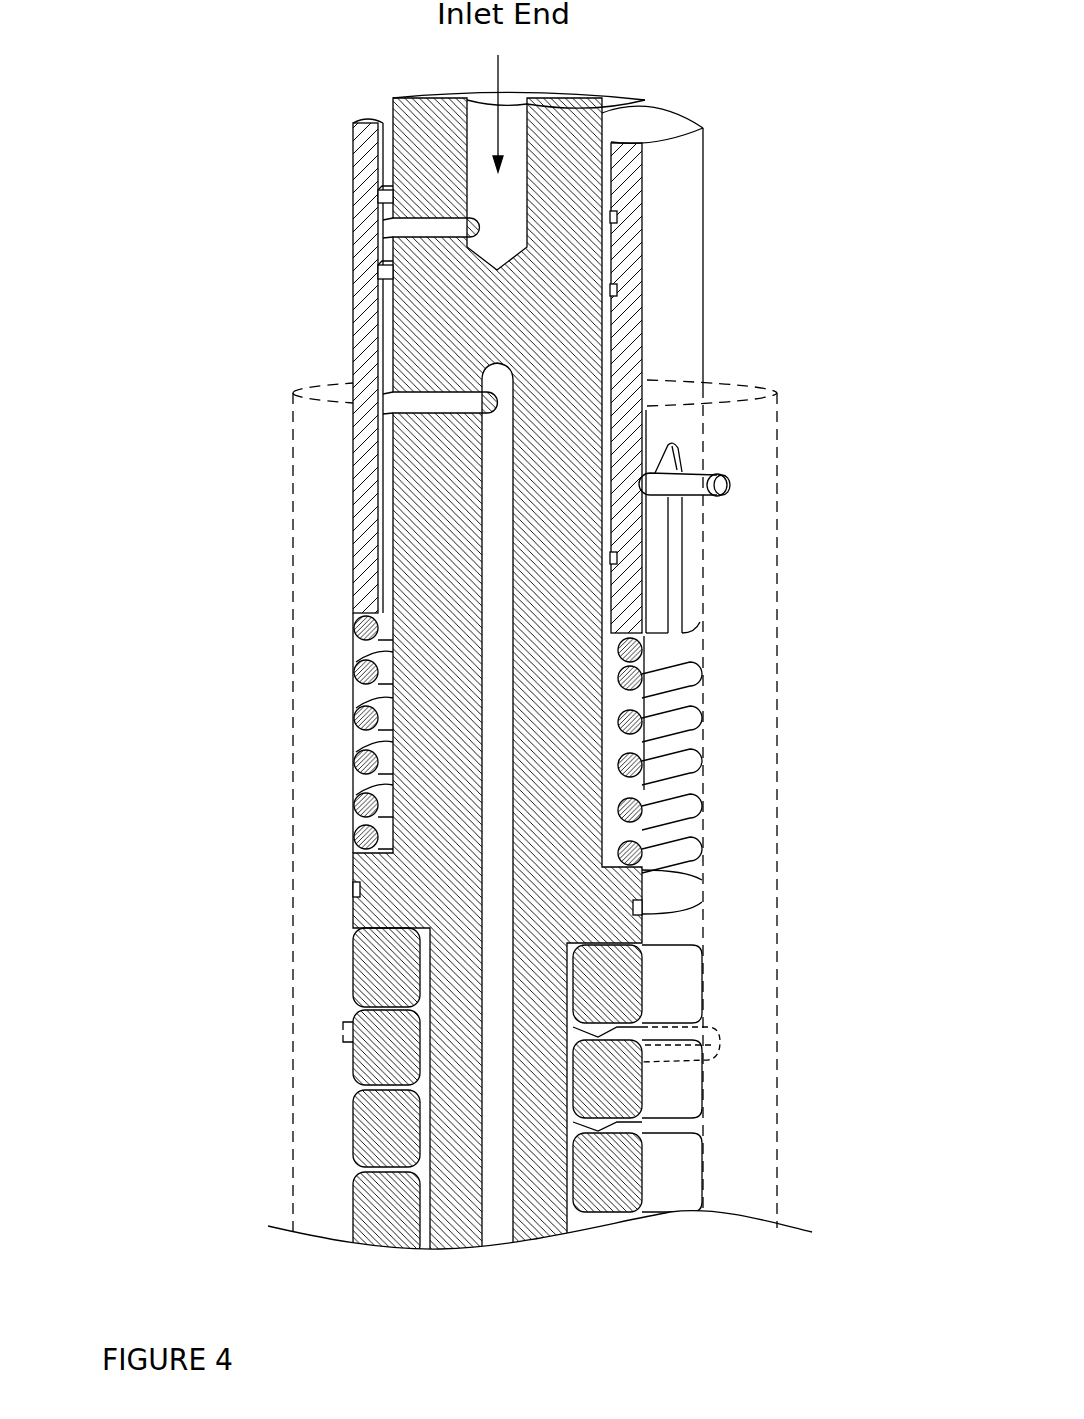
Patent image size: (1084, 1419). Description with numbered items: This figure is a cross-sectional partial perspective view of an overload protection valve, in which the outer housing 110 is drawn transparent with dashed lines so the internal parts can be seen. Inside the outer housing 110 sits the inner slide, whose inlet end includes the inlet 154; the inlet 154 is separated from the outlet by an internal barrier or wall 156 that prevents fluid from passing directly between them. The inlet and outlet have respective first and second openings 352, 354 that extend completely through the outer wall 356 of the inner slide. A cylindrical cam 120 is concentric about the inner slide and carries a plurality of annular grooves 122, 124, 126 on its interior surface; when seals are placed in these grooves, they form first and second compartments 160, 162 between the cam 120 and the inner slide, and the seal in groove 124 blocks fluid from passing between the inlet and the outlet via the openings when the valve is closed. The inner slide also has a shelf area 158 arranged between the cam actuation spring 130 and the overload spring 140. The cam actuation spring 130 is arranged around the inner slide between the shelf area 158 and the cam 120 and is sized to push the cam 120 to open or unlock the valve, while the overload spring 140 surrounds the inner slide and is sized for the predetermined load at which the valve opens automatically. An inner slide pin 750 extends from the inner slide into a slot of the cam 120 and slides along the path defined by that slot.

The outer housing 110 is at (777, 650).
The cam 120 is at (703, 288).
The groove 122 is at (618, 217).
The groove 124 is at (618, 292).
The groove 126 is at (618, 558).
The cam actuation spring 130 is at (700, 797).
The overload spring 140 is at (702, 997).
The inlet 154 is at (524, 76).
The internal barrier or wall 156 is at (548, 317).
The shelf area 158 is at (702, 890).
The first compartment 160 is at (393, 252).
The second compartment 162 is at (393, 323).
The first opening 352 is at (398, 228).
The second opening 354 is at (400, 400).
The outer wall 356 is at (420, 175).
The inner slide pin 750 is at (733, 489).